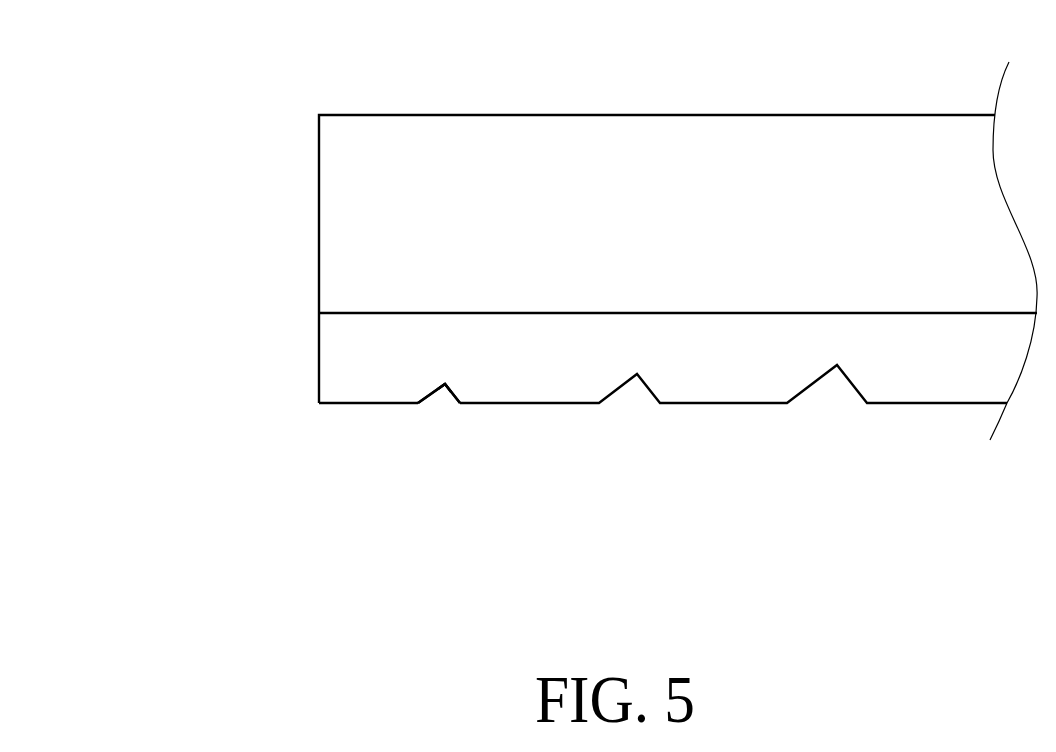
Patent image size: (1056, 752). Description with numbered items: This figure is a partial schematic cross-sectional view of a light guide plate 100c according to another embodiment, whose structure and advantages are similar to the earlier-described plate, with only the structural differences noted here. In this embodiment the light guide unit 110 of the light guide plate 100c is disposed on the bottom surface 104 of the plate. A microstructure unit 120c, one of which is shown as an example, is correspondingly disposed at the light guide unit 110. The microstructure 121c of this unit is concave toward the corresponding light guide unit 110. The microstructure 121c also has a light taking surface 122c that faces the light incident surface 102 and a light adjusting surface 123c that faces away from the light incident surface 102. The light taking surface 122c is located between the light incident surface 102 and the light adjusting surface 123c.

The light guide plate 100c is at (177, 34).
The light incident surface 102 is at (318, 133).
The bottom surface 104 is at (355, 312).
The light guide unit 110 is at (710, 403).
The microstructure unit 120c is at (400, 390).
The microstructure 121c is at (442, 403).
The light taking surface 122c is at (419, 385).
The light adjusting surface 123c is at (463, 385).